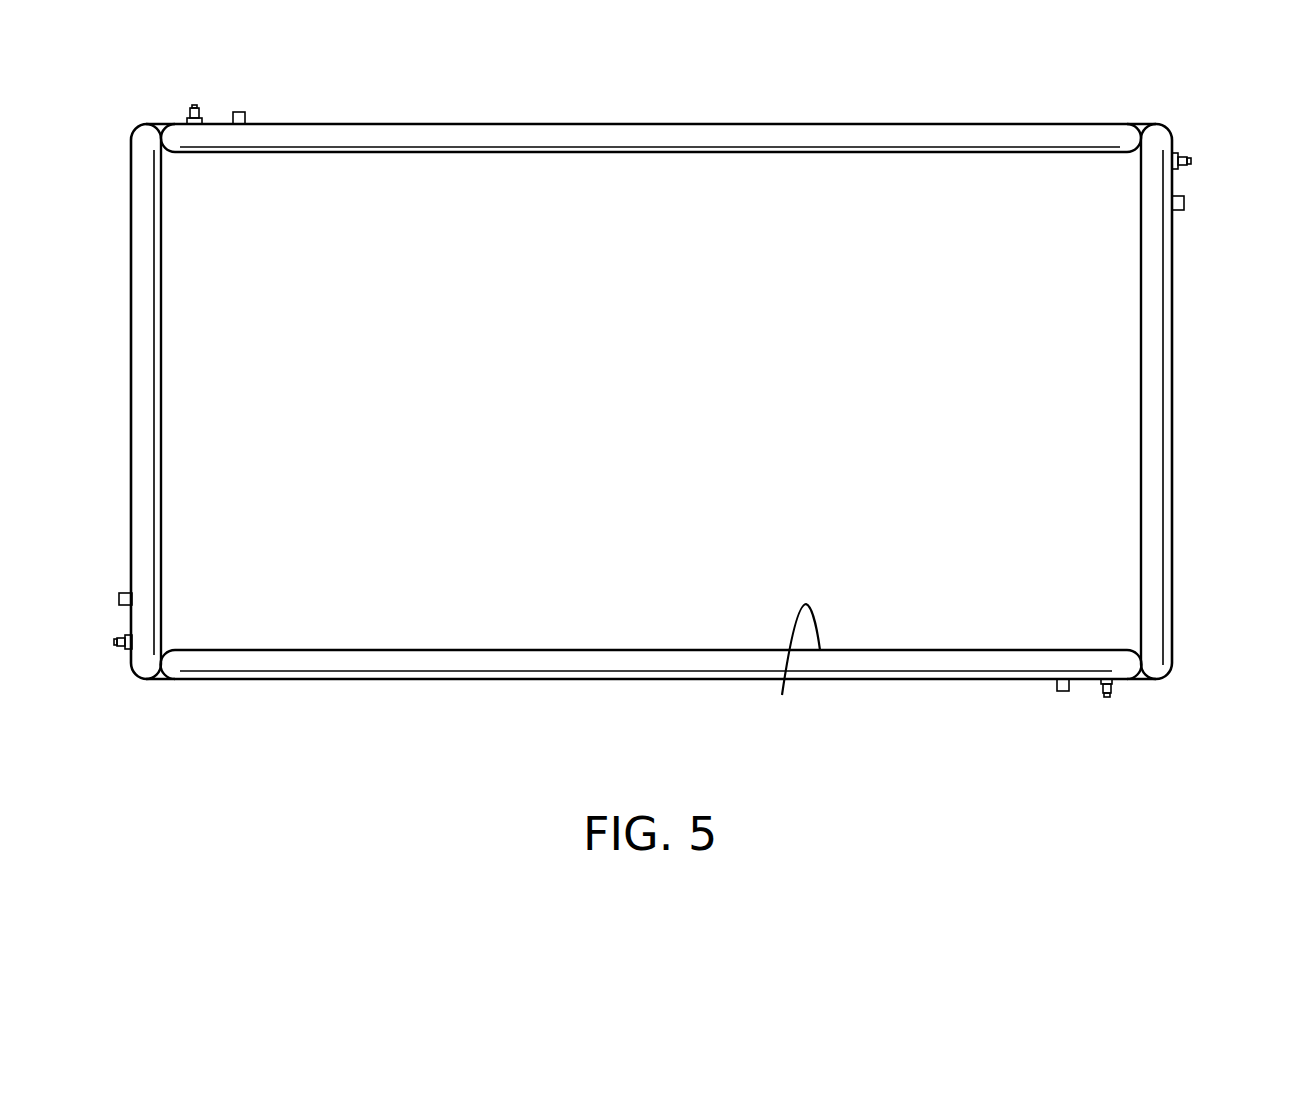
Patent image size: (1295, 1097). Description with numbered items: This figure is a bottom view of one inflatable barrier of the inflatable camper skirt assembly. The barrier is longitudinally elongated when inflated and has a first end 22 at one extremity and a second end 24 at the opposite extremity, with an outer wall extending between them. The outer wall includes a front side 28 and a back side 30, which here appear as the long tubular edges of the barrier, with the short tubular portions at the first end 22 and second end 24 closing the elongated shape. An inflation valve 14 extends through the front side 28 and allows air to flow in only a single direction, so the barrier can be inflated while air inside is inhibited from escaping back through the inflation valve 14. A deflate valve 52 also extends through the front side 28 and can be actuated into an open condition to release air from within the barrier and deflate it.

The first end 22 is at (1157, 124).
The second end 24 is at (1157, 680).
The front side 28 is at (952, 680).
The back side 30 is at (782, 695).
The deflate valve 52 is at (1061, 691).
The inflation valve 14 is at (1106, 697).